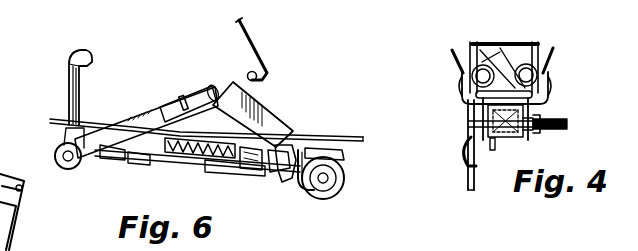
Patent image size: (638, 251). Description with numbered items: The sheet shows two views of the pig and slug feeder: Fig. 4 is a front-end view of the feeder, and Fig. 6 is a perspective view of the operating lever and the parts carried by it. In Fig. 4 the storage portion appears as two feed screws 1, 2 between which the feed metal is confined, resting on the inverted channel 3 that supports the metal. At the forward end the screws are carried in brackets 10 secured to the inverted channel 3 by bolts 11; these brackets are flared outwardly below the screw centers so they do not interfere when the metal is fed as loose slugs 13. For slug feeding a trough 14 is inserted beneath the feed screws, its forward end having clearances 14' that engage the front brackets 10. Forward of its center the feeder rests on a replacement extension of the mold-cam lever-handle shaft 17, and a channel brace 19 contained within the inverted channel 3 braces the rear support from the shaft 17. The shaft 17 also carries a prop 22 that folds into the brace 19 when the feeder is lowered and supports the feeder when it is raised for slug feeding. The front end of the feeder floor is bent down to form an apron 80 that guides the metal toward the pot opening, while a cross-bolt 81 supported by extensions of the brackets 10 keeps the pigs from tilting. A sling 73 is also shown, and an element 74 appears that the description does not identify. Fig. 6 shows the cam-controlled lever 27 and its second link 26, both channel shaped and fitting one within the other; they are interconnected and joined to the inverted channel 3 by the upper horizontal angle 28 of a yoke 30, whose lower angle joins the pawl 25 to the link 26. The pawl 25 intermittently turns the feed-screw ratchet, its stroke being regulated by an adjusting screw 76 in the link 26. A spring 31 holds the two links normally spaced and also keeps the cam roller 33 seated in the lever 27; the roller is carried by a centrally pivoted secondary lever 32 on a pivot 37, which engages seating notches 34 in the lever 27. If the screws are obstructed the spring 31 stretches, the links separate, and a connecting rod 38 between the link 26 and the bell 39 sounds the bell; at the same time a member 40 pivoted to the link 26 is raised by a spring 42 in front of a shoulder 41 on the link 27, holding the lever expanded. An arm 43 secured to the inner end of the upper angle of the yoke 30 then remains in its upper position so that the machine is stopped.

In FIG. 6, the pawl 25 is at (68, 90).
In FIG. 6, the second link 26 is at (157, 115).
In FIG. 6, the cam-controlled lever 27 is at (247, 107).
In FIG. 6, the upper horizontal angle 28 is at (226, 88).
In FIG. 6, the yoke 30 is at (75, 168).
In FIG. 6, the spring 31 is at (195, 160).
In FIG. 6, the secondary lever 32 is at (290, 176).
In FIG. 6, the cam roller 33 is at (345, 171).
In FIG. 6, the seating notches 34 is at (303, 188).
In FIG. 6, the pivot 37 is at (280, 184).
In FIG. 6, the connecting rod 38 is at (120, 162).
In FIG. 6, the bell 39 is at (245, 174).
In FIG. 6, the member 40 is at (222, 162).
In FIG. 6, the shoulder 41 is at (275, 172).
In FIG. 6, the spring 42 is at (150, 168).
In FIG. 6, the arm 43 is at (258, 50).
In FIG. 6, the frame rail 74 is at (68, 121).
In FIG. 4, the frame rail 74 is at (462, 154).
In FIG. 6, the adjusting screw 76 is at (184, 100).
In FIG. 4, the feed screw 1 is at (470, 73).
In FIG. 4, the feed screw 2 is at (538, 75).
In FIG. 4, the inverted channel 3 is at (542, 129).
In FIG. 4, the brackets 10 is at (463, 90).
In FIG. 4, the bolt 11 is at (546, 107).
In FIG. 4, the loose slugs 13 is at (492, 47).
In FIG. 4, the trough 14 is at (503, 52).
In FIG. 4, the clearances 14' is at (512, 77).
In FIG. 4, the shaft 17 is at (568, 121).
In FIG. 4, the channel 19 is at (537, 124).
In FIG. 4, the prop 22 is at (507, 140).
In FIG. 4, the sling 73 is at (471, 135).
In FIG. 4, the apron 80 is at (494, 150).
In FIG. 4, the cross-bolt 81 is at (507, 43).